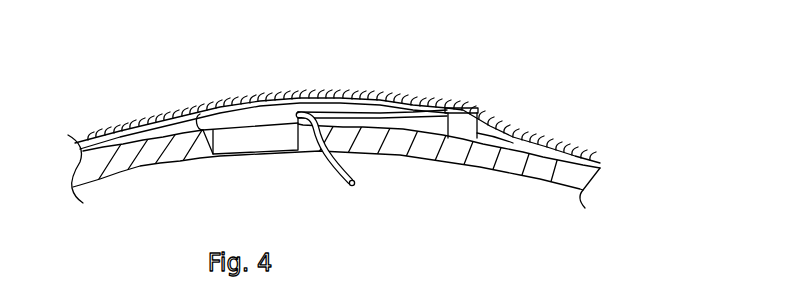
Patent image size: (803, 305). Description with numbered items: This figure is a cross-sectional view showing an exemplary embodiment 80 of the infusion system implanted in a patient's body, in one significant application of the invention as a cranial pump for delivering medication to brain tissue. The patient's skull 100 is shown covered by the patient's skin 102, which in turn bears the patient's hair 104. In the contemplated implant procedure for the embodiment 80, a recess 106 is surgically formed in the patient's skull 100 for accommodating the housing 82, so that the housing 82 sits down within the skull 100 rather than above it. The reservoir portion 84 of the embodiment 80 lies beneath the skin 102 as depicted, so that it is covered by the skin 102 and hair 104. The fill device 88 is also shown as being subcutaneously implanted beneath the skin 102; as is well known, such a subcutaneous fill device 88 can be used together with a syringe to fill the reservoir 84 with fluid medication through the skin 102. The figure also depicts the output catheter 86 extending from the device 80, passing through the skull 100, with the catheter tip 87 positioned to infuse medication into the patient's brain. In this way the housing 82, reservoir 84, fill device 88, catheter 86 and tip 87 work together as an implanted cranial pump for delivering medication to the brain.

The embodiment 80 is at (268, 68).
The housing 82 is at (254, 143).
The reservoir portion 84 is at (228, 113).
The output catheter 86 is at (328, 167).
The catheter tip 87 is at (357, 183).
The fill device 88 is at (474, 108).
The skull 100 is at (114, 153).
The skin 102 is at (493, 122).
The hair 104 is at (387, 97).
The recess 106 is at (208, 156).